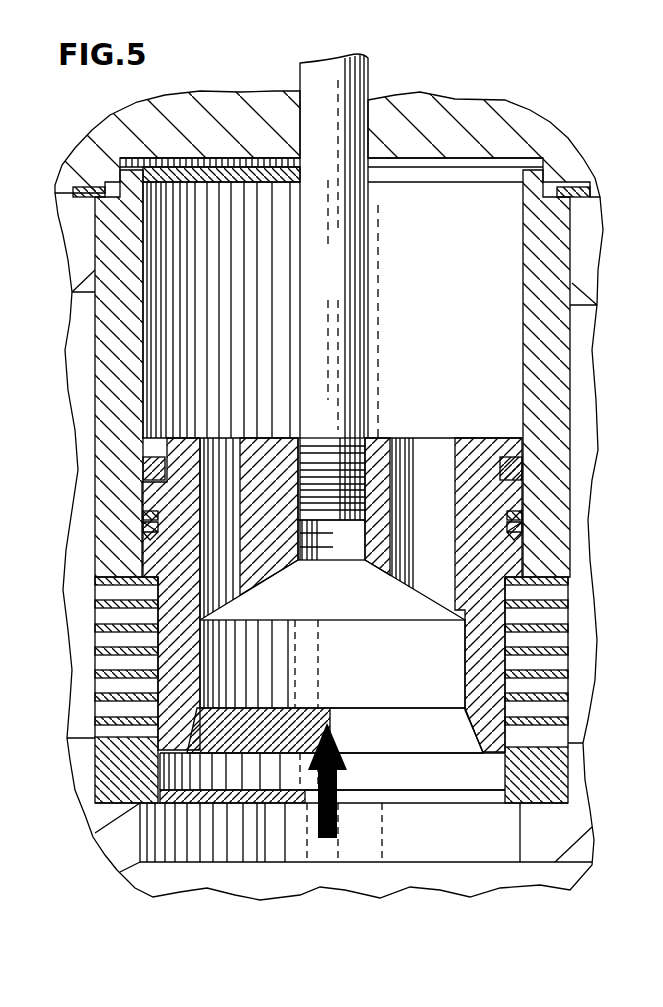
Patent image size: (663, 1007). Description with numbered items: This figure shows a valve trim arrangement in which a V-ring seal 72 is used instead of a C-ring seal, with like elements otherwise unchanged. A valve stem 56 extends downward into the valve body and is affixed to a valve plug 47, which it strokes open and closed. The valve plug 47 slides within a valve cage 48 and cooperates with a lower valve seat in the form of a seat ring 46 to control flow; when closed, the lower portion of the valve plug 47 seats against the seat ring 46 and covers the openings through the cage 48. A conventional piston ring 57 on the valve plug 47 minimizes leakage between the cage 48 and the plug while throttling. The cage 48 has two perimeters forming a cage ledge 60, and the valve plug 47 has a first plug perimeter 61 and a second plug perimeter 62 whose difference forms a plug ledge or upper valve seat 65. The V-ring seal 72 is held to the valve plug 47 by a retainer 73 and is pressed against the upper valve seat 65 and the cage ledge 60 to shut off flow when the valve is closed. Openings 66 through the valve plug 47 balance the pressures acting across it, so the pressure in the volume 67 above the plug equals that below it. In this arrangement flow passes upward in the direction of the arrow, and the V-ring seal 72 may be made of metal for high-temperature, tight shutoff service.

The seat ring 46 is at (537, 780).
The valve plug 47 is at (483, 720).
The valve cage 48 is at (550, 233).
The valve stem 56 is at (347, 100).
The piston ring 57 is at (142, 465).
The cage ledge 60 is at (142, 527).
The first plug perimeter 61 is at (95, 437).
The second plug perimeter 62 is at (125, 583).
The upper valve seat 65 is at (250, 475).
The openings 66 is at (412, 460).
The volume 67 is at (469, 257).
The V-ring seal 72 is at (142, 513).
The retainer 73 is at (142, 537).